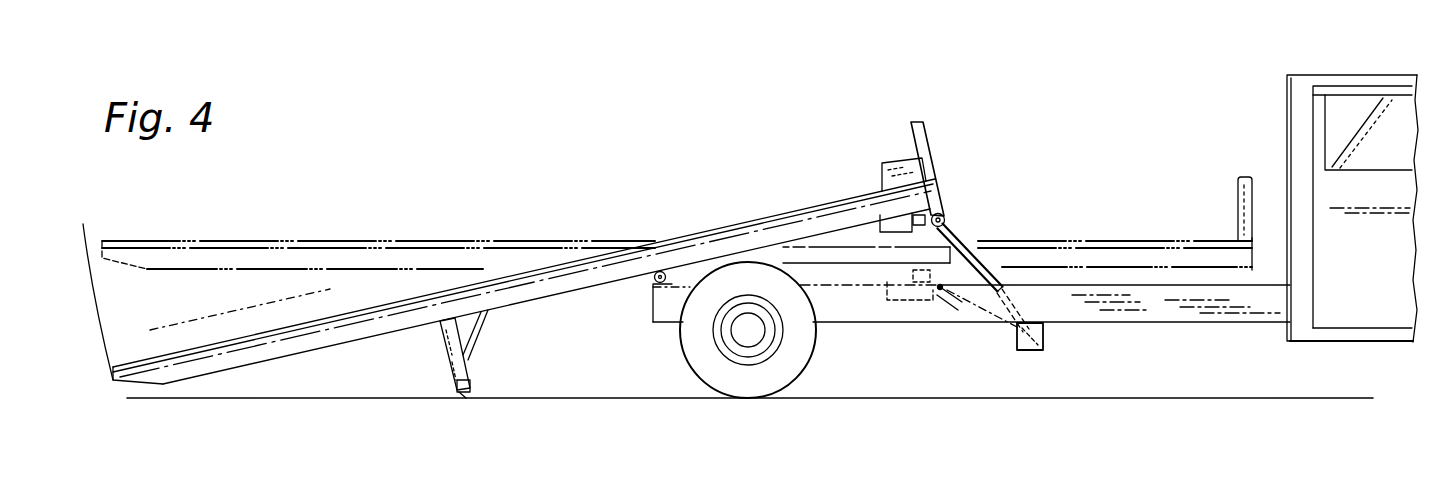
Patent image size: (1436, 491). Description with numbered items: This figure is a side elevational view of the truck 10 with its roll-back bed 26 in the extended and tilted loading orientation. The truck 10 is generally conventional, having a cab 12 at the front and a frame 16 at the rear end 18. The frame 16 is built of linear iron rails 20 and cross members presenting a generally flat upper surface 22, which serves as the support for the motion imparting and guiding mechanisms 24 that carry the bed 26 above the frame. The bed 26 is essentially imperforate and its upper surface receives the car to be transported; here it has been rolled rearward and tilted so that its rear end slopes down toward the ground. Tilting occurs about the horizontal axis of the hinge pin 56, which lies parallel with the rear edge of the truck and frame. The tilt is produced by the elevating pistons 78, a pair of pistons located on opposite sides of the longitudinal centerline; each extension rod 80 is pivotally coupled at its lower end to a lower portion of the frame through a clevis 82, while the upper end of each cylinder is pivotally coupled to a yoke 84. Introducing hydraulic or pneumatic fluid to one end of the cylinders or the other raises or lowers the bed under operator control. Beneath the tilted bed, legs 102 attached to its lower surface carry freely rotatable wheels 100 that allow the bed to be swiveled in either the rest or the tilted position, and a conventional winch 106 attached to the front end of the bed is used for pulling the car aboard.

The truck 10 is at (1335, 58).
The cab 12 is at (1402, 75).
The frame 16 is at (310, 264).
The rear end 18 is at (102, 242).
The iron rails 20 is at (1105, 308).
The upper surface 22 is at (1197, 280).
The motion imparting and guiding mechanisms 24 is at (546, 296).
The bed 26 is at (550, 268).
The hinge pin 56 is at (636, 312).
The elevating pistons 78 is at (970, 282).
The extension rod 80 is at (1015, 277).
The clevis 82 is at (1043, 348).
The yoke 84 is at (946, 214).
The wheels 100 is at (473, 381).
The legs 102 is at (474, 343).
The winch 106 is at (893, 166).